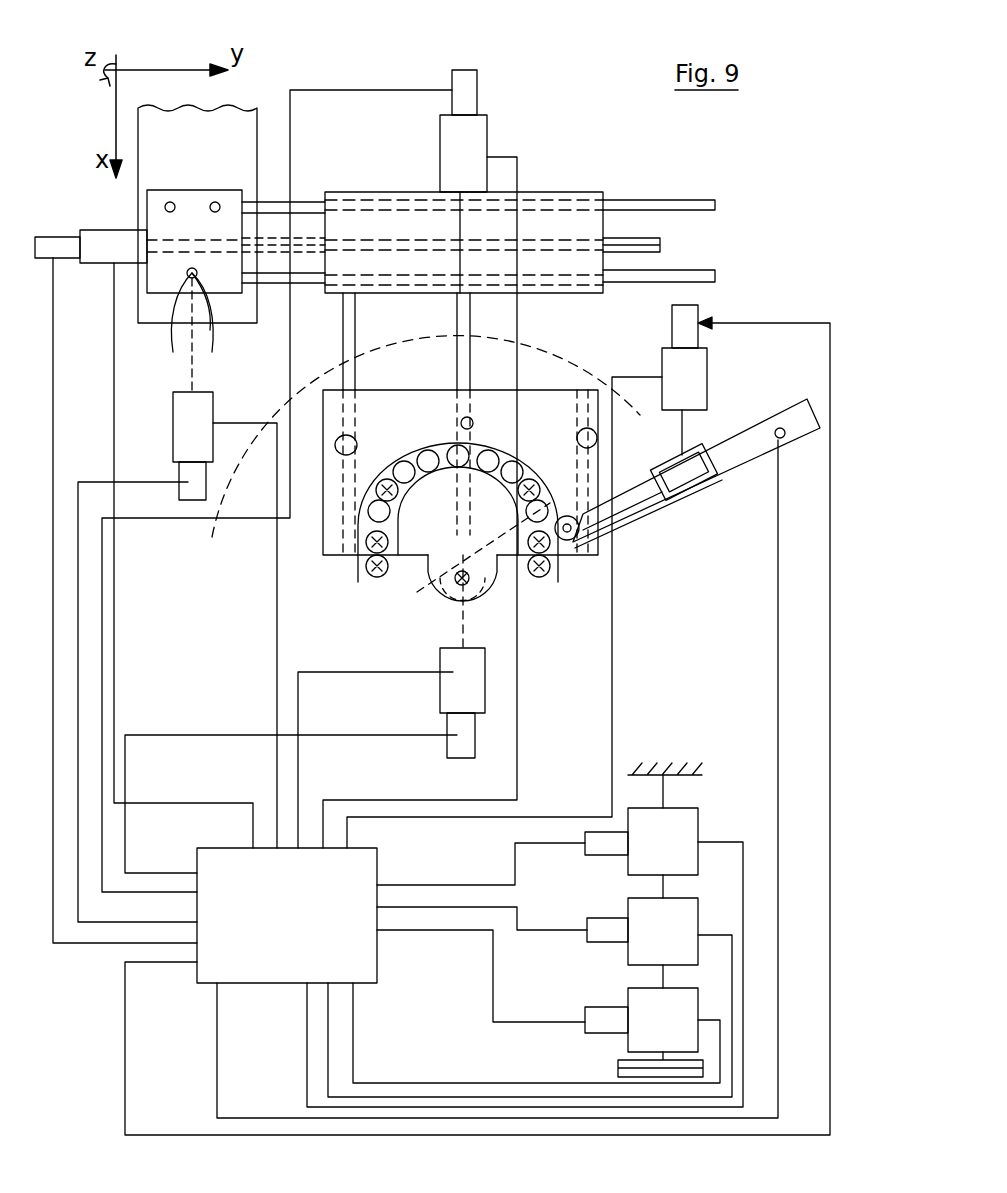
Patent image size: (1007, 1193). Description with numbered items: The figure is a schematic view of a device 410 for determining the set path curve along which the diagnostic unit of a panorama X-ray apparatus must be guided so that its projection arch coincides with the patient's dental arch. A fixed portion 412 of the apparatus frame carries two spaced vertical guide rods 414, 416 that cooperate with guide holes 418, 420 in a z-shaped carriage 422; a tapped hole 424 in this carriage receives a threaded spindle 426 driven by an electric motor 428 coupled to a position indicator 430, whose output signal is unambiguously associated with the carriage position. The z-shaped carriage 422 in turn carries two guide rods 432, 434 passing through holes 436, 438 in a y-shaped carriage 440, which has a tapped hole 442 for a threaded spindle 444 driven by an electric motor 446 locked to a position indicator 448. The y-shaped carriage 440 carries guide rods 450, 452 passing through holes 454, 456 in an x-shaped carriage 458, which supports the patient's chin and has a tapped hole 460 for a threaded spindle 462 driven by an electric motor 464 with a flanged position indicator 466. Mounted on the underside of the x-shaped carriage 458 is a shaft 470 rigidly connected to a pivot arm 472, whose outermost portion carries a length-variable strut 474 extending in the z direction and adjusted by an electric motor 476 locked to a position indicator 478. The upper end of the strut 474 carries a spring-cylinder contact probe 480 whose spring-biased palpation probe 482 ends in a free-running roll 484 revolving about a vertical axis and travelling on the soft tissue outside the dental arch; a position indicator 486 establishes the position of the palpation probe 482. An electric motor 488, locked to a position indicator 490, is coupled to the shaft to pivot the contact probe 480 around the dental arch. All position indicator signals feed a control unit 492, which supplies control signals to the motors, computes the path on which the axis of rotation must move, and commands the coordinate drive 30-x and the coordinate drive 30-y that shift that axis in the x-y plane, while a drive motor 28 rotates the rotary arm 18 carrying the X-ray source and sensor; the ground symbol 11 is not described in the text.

The device for determining the set path curve 410 is at (764, 232).
The fixed portion of the frame 412 is at (247, 102).
The vertical guide rod 414 is at (170, 202).
The vertical guide rod 416 is at (215, 202).
The guide hole 418 is at (188, 278).
The guide hole 420 is at (196, 278).
The z-shaped carriage 422 is at (147, 212).
The tapped hole 424 is at (208, 332).
The threaded spindle 426 is at (166, 335).
The electric motor 428 is at (180, 398).
The position indicator 430 is at (182, 462).
The guide rod 432 is at (298, 205).
The guide rod 434 is at (308, 293).
The hole 436 is at (352, 200).
The hole 438 is at (372, 293).
The y-shaped carriage 440 is at (590, 195).
The tapped hole 442 is at (516, 238).
The threaded spindle 444 is at (640, 240).
The electric motor 446 is at (96, 263).
The position indicator 448 is at (55, 236).
The guide rod 450 is at (374, 472).
The guide rod 452 is at (554, 472).
The hole 454 is at (370, 447).
The hole 456 is at (558, 444).
The x-shaped carriage 458 is at (432, 405).
The tapped hole 460 is at (470, 403).
The threaded spindle 462 is at (472, 318).
The electric motor 464 is at (480, 115).
The position indicator 466 is at (452, 82).
The shaft 470 is at (440, 592).
The pivot arm 472 is at (703, 500).
The length-variable strut 474 is at (745, 462).
The electric motor 476 is at (682, 366).
The position indicator 478 is at (672, 323).
The contact probe 480 is at (796, 395).
The palpation probe 482 is at (640, 508).
The free-running roll 484 is at (580, 545).
The position indicator 486 is at (708, 490).
The electric motor 488 is at (455, 700).
The position indicator 490 is at (460, 760).
The control unit 492 is at (258, 955).
The ground reference 11 is at (680, 755).
The coordinate drive acting in the x direction 30-x is at (650, 855).
The coordinate drive acting in the y direction 30-y is at (650, 940).
The drive motor 28 is at (650, 985).
The rotary arm 18 is at (615, 1070).